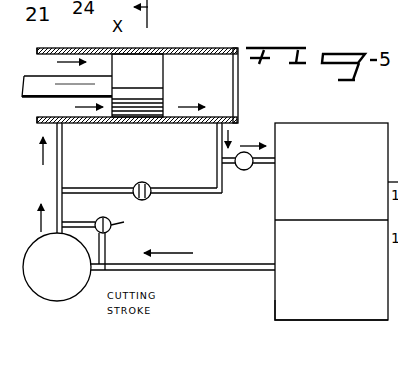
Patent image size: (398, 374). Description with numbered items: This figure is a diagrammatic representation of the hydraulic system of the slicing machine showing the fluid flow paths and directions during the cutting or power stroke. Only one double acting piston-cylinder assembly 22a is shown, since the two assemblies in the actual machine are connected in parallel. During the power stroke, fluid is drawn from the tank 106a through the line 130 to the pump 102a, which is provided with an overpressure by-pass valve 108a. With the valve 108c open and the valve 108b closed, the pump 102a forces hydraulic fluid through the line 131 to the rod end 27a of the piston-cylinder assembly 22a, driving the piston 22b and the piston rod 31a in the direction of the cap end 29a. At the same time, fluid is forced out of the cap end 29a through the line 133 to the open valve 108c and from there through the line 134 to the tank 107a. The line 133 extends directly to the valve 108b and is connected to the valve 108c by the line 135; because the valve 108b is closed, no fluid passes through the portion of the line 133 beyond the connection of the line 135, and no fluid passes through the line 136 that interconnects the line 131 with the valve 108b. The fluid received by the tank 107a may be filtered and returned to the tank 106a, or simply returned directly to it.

The double acting piston-cylinder assembly 22a is at (184, 45).
The piston 22b is at (145, 67).
The rod end 27a is at (47, 57).
The cap end 29a is at (232, 62).
The piston rod 31a is at (34, 97).
The tank 107a is at (303, 143).
The tank 106a is at (285, 305).
The pump 102a is at (58, 280).
The line 131 is at (55, 191).
The line 133 is at (218, 143).
The line 135 is at (228, 155).
The line 130 is at (222, 264).
The line 136 is at (80, 192).
The line 134 is at (250, 170).
The overpressure by-pass valve 108a is at (109, 227).
The valve 108b is at (144, 200).
The valve 108c is at (238, 167).